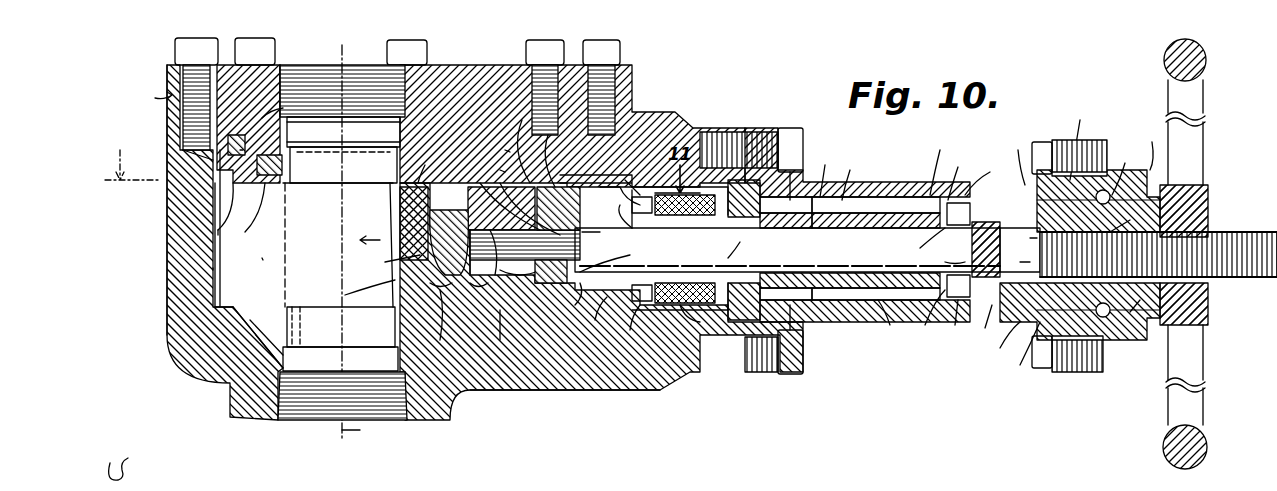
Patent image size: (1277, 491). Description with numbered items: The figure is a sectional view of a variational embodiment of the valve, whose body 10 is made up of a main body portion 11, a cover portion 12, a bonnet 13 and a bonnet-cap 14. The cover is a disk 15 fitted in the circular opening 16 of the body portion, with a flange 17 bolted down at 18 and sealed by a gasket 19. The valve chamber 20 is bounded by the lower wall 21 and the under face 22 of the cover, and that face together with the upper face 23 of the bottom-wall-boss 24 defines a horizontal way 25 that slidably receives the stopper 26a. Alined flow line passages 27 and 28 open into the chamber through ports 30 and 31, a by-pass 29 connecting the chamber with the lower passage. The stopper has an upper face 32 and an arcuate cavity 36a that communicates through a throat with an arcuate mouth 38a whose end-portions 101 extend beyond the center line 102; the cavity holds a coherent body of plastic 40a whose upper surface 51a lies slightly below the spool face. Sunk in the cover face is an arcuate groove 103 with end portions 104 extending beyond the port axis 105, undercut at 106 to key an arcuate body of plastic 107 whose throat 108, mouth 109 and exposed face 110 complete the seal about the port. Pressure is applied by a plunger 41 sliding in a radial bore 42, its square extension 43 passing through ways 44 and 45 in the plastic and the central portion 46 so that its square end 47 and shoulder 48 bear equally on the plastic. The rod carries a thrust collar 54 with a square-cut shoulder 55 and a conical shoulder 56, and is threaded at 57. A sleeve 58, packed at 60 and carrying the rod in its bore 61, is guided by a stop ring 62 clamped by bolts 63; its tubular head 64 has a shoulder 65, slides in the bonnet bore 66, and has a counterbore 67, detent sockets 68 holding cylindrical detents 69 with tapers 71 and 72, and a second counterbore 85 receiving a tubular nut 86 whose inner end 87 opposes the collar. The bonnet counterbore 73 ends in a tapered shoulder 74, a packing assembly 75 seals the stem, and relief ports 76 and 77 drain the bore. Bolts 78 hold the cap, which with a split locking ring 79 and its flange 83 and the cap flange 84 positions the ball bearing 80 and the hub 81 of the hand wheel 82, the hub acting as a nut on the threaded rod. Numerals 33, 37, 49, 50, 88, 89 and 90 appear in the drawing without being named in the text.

The body 10 is at (151, 94).
The main body portion 11 is at (167, 322).
The cover portion 12 is at (282, 70).
The bonnet 13 is at (895, 185).
The bonnet-cap 14 is at (1107, 170).
The disk 15 is at (462, 135).
The circular opening 16 is at (258, 115).
The flange 17 is at (170, 72).
The bolts 18 is at (255, 40).
The gasket 19 is at (556, 112).
The valve chamber 20 is at (213, 270).
The lower wall 21 is at (575, 318).
The under face 22 is at (235, 192).
The upper face 23 is at (283, 268).
The bottom-wall-boss 24 is at (434, 324).
The horizontal way 25 is at (372, 245).
The stopper 26a is at (347, 286).
The flow line passage 27 is at (351, 238).
The flow line passage 28 is at (286, 407).
The by-pass 29 is at (258, 340).
The port 30 is at (343, 162).
The port 31 is at (341, 327).
The upper face 32 is at (417, 165).
The ring 33 is at (398, 322).
The arcuate cavity 36a is at (645, 185).
The nut 37 is at (543, 280).
The arcuate groove or mouth 38a is at (518, 145).
The coherent body of plastic material 40a is at (430, 283).
The plunger 41 is at (787, 250).
The radial bore 42 is at (592, 322).
The extension 43 is at (525, 245).
The way 44 is at (572, 294).
The way 45 is at (520, 269).
The central portion 46 is at (438, 292).
The square end 47 is at (476, 289).
The shoulder 48 is at (600, 236).
The spindle shoulder 49 is at (614, 257).
The bore 50 is at (483, 242).
The upper surface of the plastic 51a is at (643, 192).
The thrust collar 54 is at (972, 247).
The square-cut shoulder 55 is at (1024, 257).
The conical shoulder 56 is at (940, 263).
The threads 57 is at (1250, 228).
The sleeve 58 is at (870, 205).
The packing 60 is at (630, 325).
The sleeve bore 61 is at (740, 246).
The stop ring 62 is at (638, 245).
The bolts 63 is at (770, 150).
The enlarged terminal portion or tubular head 64 is at (934, 166).
The shoulder 65 is at (881, 318).
The bonnet bore 66 is at (926, 314).
The counterbore 67 is at (919, 240).
The detent ways or sockets 68 is at (954, 176).
The cylindrical detents 69 is at (984, 177).
The taper 71 is at (949, 321).
The taper 72 is at (958, 203).
The counterbore 73 is at (821, 173).
The shoulder 74 is at (844, 177).
The packing assembly 75 is at (677, 320).
The relief port 76 is at (803, 340).
The relief port 77 is at (1019, 351).
The bolts 78 is at (1060, 140).
The split locking ring 79 is at (1077, 142).
The ball bearing 80 is at (1125, 172).
The hub 81 is at (1130, 218).
The hand wheel 82 is at (1200, 62).
The flange 83 is at (1103, 190).
The cap flange 84 is at (1147, 148).
The second counterbore 85 is at (1017, 161).
The tubular nut 86 is at (996, 342).
The inner end 87 is at (1009, 250).
The key 88 is at (1021, 238).
The screw 89 is at (981, 324).
The passage 90 is at (615, 172).
The end-portions 101 is at (480, 183).
The center line 102 is at (506, 336).
The arcuate groove 103 is at (283, 183).
The end portions 104 is at (355, 160).
The axis 105 is at (369, 432).
The undercut 106 is at (195, 232).
The arcuate body of plastic material 107 is at (268, 111).
The throat 108 is at (343, 132).
The mouth 109 is at (268, 193).
The face of plastic 110 is at (192, 260).